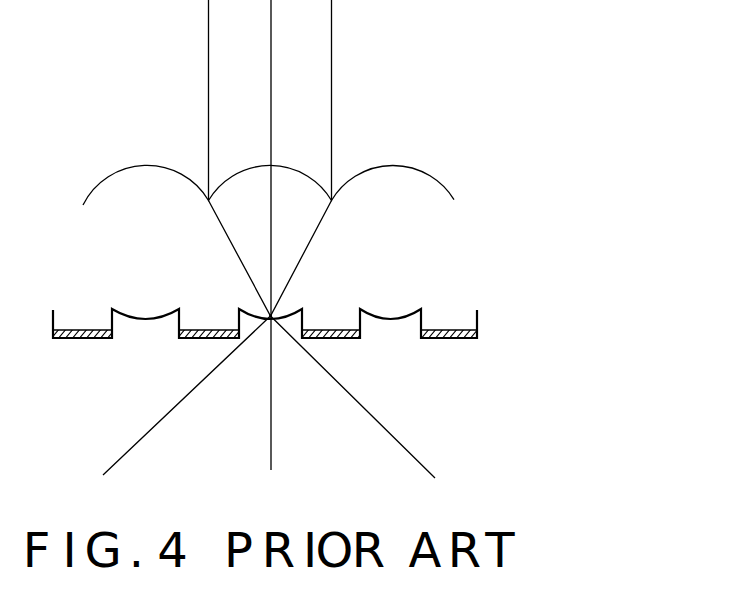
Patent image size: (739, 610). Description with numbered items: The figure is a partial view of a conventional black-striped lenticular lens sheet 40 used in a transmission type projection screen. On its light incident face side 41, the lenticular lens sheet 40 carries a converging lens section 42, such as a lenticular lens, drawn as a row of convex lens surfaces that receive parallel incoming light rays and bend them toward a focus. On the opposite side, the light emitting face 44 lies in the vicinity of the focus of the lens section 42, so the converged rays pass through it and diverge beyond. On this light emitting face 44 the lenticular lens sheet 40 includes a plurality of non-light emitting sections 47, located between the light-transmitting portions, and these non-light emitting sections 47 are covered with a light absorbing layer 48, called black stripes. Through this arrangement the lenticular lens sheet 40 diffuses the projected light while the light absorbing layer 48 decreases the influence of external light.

The lenticular lens sheet 40 is at (513, 227).
The light incident face side 41 is at (447, 190).
The converging lens section 42 is at (421, 168).
The light emitting face 44 is at (290, 318).
The non-light emitting sections 47 is at (334, 322).
The light absorbing layer 48 is at (458, 338).